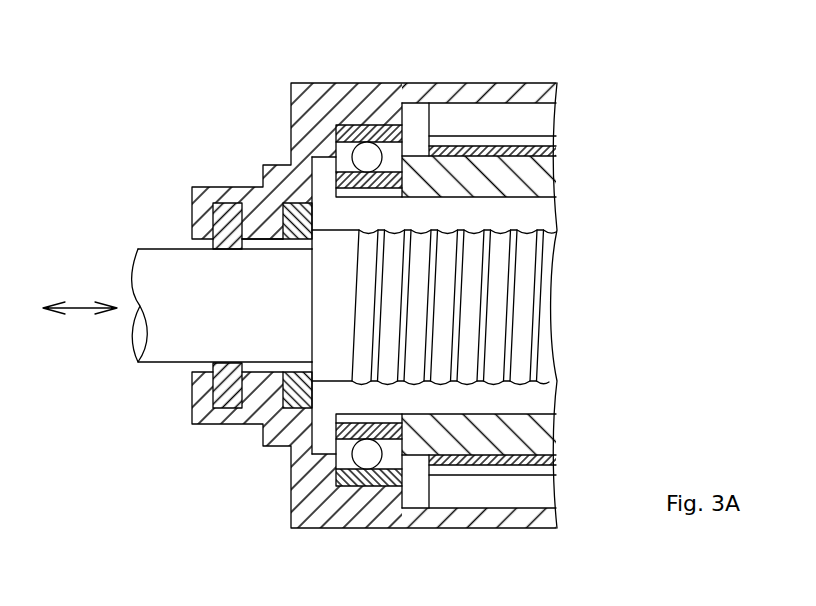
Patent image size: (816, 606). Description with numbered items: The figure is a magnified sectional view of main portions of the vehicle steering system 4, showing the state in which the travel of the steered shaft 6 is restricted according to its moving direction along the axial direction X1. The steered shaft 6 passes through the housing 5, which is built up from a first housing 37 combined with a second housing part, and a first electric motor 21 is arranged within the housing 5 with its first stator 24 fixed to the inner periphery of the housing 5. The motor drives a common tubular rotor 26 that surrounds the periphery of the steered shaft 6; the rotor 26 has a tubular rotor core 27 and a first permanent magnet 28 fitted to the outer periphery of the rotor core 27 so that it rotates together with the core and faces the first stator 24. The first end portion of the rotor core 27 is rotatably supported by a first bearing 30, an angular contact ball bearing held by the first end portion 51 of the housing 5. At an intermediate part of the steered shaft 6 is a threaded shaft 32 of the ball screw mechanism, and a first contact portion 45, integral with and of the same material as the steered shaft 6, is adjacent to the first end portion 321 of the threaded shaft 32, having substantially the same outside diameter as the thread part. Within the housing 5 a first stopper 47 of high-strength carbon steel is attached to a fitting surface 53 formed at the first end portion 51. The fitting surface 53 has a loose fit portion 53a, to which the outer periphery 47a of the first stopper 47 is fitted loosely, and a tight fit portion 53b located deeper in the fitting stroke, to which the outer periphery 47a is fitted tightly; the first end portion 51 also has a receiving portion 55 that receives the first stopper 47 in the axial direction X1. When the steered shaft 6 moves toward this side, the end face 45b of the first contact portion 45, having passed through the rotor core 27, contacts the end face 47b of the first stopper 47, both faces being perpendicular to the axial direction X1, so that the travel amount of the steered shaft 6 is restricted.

The housing 4 is at (457, 95).
The housing 5 is at (424, 78).
The steered shaft 6 is at (150, 226).
The first electric motor 21 is at (515, 100).
The first stator 24 is at (492, 118).
The rotor 26 is at (563, 177).
The rotor core 27 is at (545, 187).
The first permanent magnet 28 is at (518, 147).
The first bearing 30 is at (363, 153).
The threaded shaft 32 is at (563, 308).
The first end portion of the threaded shaft 321 is at (360, 381).
The first housing 37 is at (509, 520).
The first contact portion 45 is at (313, 366).
The end face of the first contact portion 45b is at (286, 374).
The first stopper 47 is at (300, 233).
The outer periphery of the first stopper 47a is at (298, 444).
The end face of the first stopper 47b is at (320, 357).
The first end portion of the housing 51 is at (202, 198).
The fitting surface 53 is at (248, 143).
The loose fit portion 53a is at (308, 217).
The tight fit portion 53b is at (280, 212).
The receiving portion 55 is at (283, 239).
The axial direction X1 is at (80, 311).